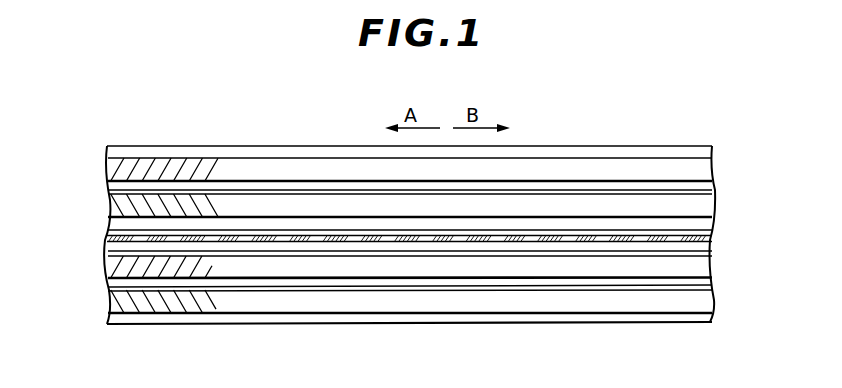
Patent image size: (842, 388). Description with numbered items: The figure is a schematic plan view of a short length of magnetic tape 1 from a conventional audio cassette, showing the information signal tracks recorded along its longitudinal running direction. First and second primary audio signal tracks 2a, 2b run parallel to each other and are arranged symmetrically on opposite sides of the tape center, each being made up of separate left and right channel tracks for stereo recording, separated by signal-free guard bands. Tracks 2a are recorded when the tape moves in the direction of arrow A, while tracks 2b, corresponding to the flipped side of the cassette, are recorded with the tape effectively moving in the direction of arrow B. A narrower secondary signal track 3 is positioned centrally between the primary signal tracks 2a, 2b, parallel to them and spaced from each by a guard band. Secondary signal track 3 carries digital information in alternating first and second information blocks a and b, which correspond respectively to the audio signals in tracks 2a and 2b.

The magnetic tape 1 is at (252, 143).
The first primary signal tracks 2a is at (102, 158).
The second primary signal tracks 2b is at (102, 253).
The secondary signal track 3 is at (101, 238).